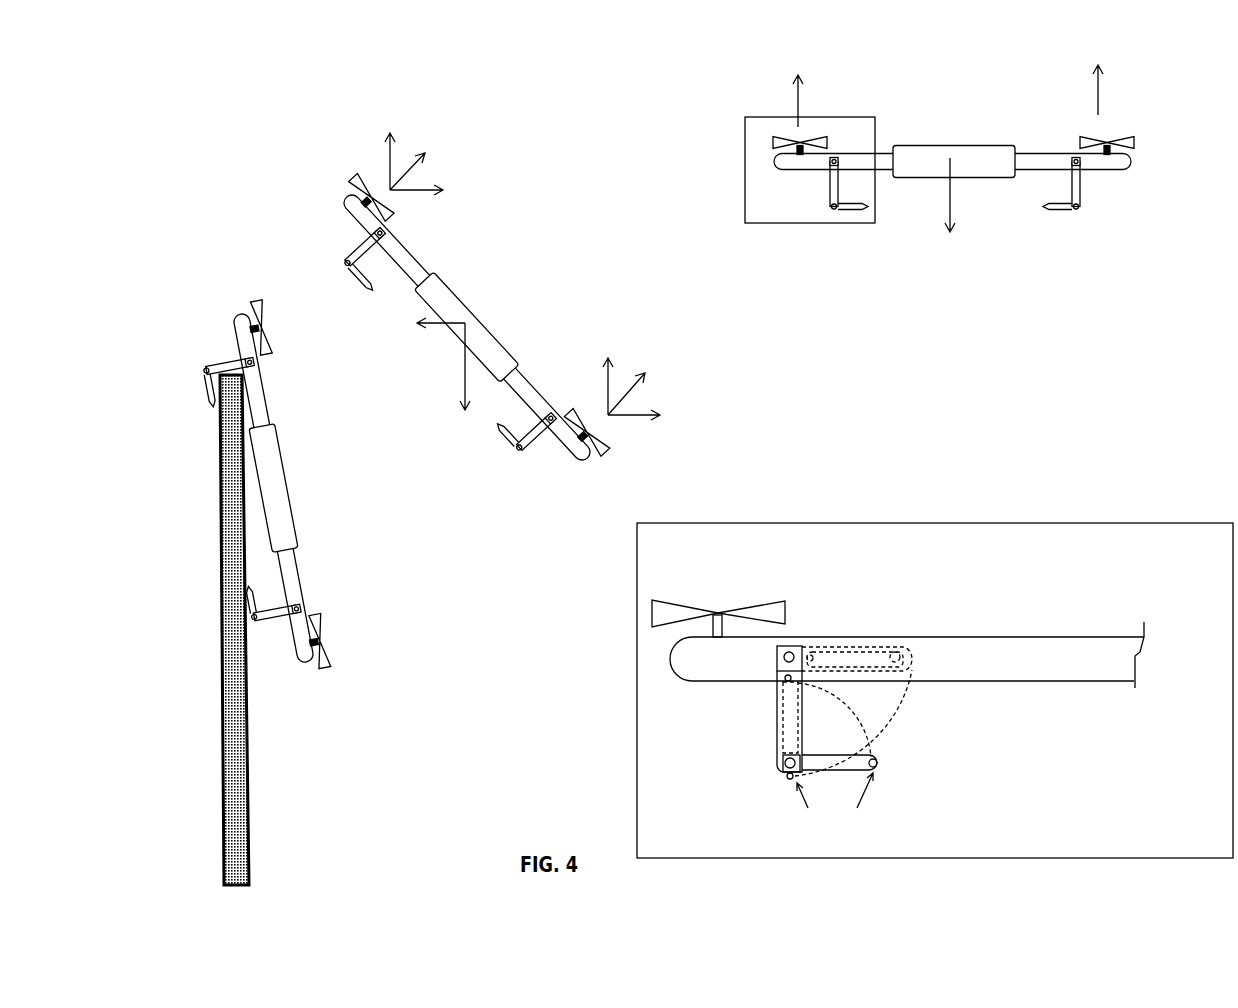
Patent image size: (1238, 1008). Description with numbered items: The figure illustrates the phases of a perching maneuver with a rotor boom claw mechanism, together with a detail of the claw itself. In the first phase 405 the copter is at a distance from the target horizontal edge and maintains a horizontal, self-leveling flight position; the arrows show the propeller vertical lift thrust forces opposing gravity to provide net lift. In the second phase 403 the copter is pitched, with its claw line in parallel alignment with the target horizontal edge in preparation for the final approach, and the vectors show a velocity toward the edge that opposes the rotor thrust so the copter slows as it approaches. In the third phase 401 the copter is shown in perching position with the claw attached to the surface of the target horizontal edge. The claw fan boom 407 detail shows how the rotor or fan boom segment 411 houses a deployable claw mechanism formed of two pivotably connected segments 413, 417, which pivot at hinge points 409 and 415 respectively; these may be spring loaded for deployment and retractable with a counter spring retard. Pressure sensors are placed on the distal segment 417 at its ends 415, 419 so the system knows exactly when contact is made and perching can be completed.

The third phase 401 is at (211, 290).
The second phase 403 is at (543, 278).
The first phase 405 is at (973, 103).
The claw fan boom 407 is at (892, 489).
The hinge point 409 is at (790, 652).
The fan boom segment 411 is at (1095, 652).
The claw segment 413 is at (775, 697).
The hinge point 415 is at (782, 763).
The distal segment 417 is at (870, 653).
The end of distal segment 419 is at (876, 768).